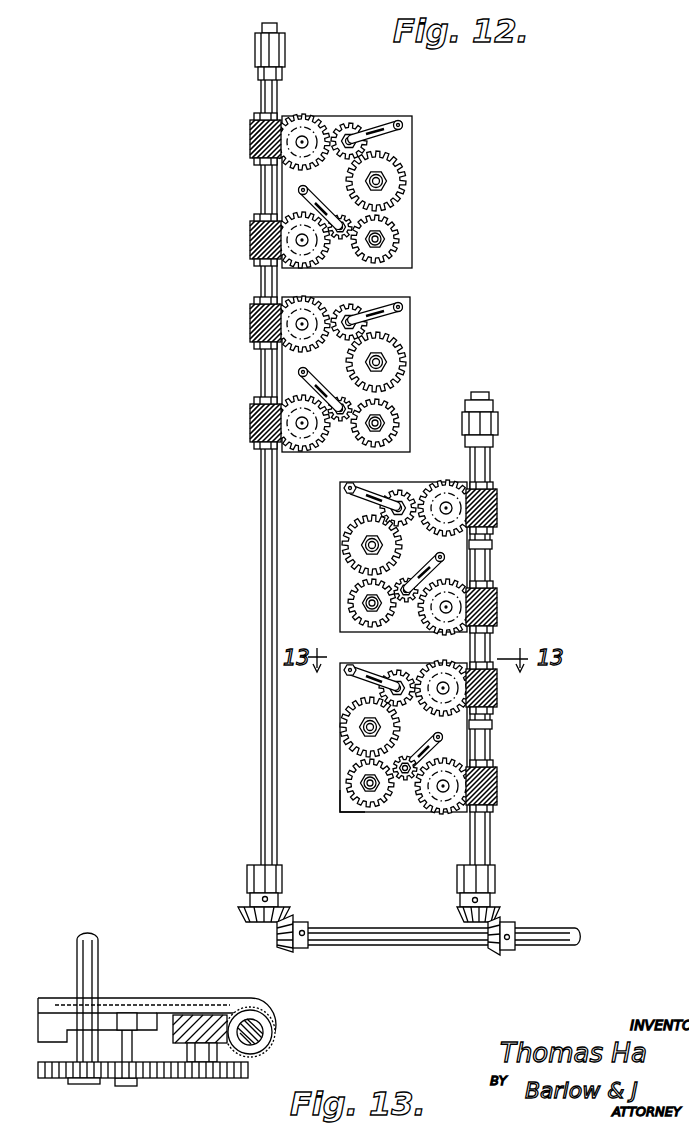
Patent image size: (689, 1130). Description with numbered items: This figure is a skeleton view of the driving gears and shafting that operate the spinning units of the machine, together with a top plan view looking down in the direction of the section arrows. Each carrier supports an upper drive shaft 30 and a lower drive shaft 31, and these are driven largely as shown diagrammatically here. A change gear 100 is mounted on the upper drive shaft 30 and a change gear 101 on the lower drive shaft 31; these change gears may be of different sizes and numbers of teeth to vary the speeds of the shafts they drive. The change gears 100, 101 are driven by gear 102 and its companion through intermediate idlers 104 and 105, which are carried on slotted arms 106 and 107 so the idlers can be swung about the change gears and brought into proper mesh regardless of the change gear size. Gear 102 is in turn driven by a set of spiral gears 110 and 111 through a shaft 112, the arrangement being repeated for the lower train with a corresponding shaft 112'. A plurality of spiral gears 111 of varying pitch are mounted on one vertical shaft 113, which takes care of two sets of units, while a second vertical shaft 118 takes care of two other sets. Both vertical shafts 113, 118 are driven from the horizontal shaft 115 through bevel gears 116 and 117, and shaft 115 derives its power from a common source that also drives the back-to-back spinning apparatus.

In FIG. 12, the upper drive shaft 30 is at (392, 178).
In FIG. 12, the lower drive shaft 31 is at (390, 240).
In FIG. 12, the change gear 100 is at (362, 712).
In FIG. 12, the change gear 101 is at (360, 795).
In FIG. 12, the gear 102 is at (495, 497).
In FIG. 13, the gear 102 is at (210, 1077).
In FIG. 12, the idler gear 104 is at (397, 673).
In FIG. 12, the idler gear 105 is at (495, 600).
In FIG. 12, the arm 106 is at (365, 670).
In FIG. 12, the arm 107 is at (434, 749).
In FIG. 13, the spiral gear 110 is at (207, 1020).
In FIG. 12, the spiral gear 111 is at (497, 517).
In FIG. 13, the spiral gear 111 is at (273, 1038).
In FIG. 12, the shaft 112 is at (493, 598).
In FIG. 13, the shaft 112 is at (143, 1086).
In FIG. 12, the lower worm wheel 112' is at (442, 724).
In FIG. 12, the vertical shaft 113 is at (488, 738).
In FIG. 12, the shaft 115 is at (552, 947).
In FIG. 12, the bevel gear 116 is at (253, 917).
In FIG. 12, the bevel gear 117 is at (283, 950).
In FIG. 12, the vertical shaft 118 is at (245, 472).